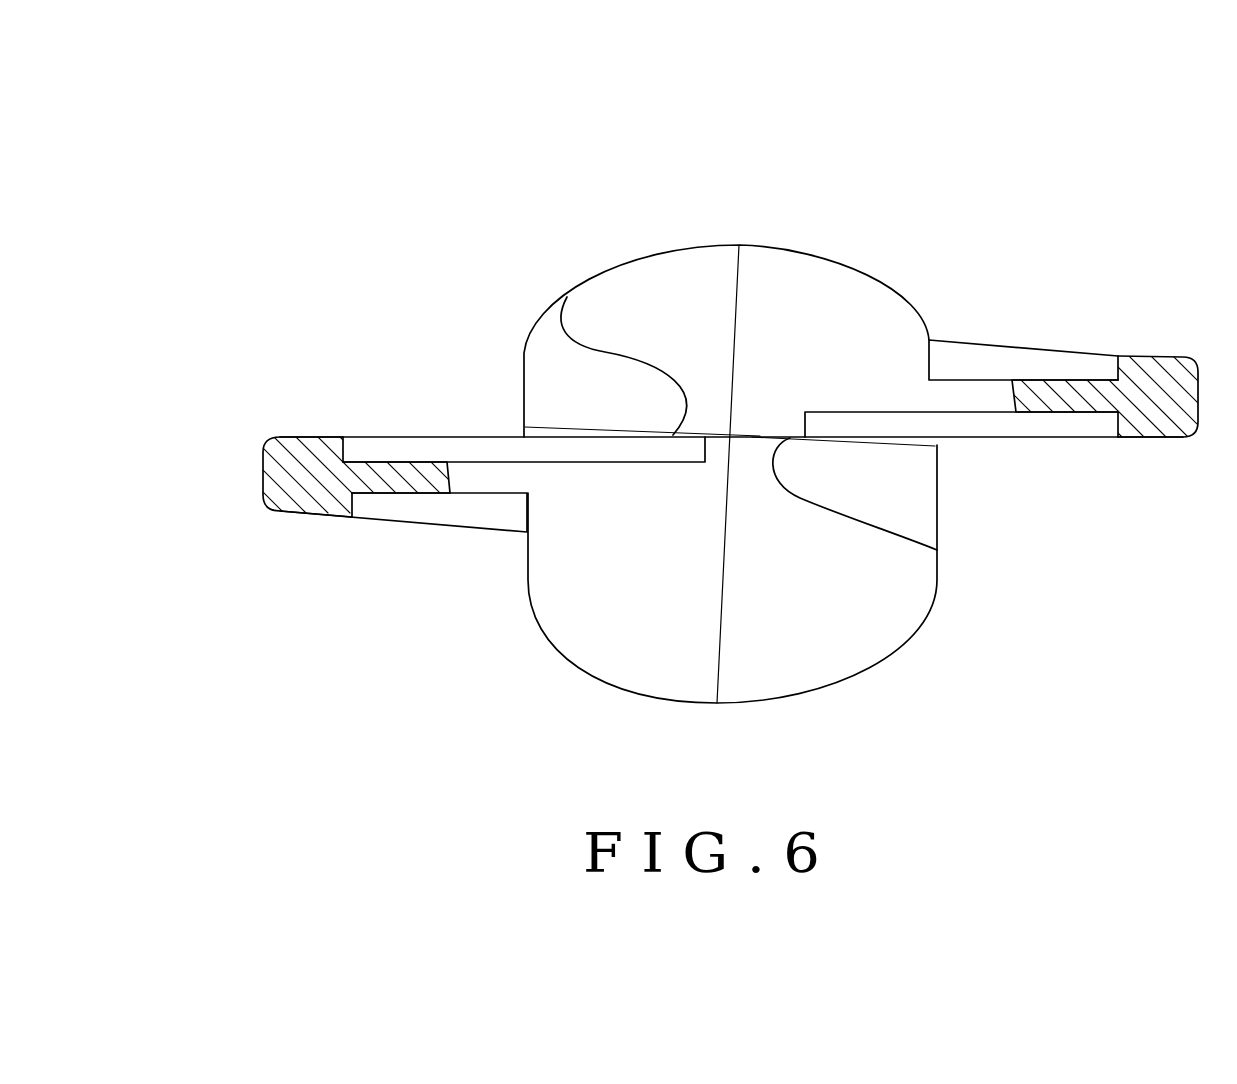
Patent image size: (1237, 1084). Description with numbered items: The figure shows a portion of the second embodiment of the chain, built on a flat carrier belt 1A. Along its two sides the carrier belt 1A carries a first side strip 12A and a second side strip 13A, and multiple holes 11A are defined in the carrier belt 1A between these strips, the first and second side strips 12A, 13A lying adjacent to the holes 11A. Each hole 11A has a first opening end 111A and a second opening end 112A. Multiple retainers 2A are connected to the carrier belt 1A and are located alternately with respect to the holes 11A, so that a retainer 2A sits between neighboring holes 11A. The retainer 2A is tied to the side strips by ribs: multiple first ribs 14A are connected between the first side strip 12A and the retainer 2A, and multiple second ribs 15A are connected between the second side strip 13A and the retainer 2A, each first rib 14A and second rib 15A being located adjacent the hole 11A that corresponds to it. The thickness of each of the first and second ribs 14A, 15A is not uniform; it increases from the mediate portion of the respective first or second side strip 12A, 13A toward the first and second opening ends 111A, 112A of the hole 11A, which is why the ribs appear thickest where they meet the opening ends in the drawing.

The flat carrier belt 1A is at (1217, 172).
The retainer 2A is at (840, 640).
The hole 11A is at (750, 462).
The first opening end 111A is at (437, 525).
The second opening end 112A is at (455, 437).
The first side strip 12A is at (283, 465).
The second side strip 13A is at (1168, 403).
The first rib 14A is at (390, 477).
The second rib 15A is at (1047, 402).